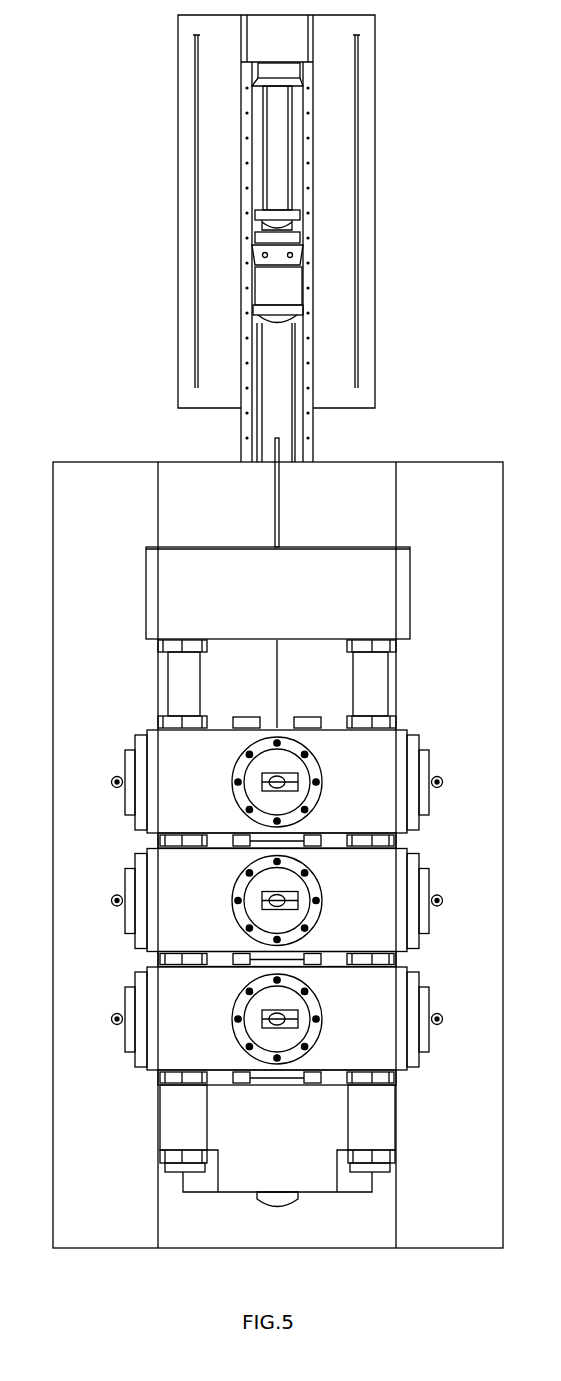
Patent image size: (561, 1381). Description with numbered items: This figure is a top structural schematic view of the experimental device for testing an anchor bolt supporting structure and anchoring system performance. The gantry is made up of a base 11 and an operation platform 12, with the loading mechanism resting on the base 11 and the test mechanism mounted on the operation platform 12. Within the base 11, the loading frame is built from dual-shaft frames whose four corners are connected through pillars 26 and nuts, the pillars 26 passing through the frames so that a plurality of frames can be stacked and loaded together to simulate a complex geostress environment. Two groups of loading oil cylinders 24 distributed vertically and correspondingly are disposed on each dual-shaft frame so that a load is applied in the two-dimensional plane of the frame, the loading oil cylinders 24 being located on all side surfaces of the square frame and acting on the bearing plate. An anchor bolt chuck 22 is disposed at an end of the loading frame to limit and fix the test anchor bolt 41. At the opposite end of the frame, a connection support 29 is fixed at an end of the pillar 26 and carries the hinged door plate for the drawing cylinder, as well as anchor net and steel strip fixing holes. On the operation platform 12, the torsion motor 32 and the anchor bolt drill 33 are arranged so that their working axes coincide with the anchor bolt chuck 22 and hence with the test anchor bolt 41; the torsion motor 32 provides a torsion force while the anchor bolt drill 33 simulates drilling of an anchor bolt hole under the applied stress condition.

The base 11 is at (62, 567).
The operation platform 12 is at (178, 185).
The anchor bolt chuck 22 is at (272, 1210).
The loading oil cylinder 24 is at (432, 772).
The pillar 26 is at (175, 683).
The connection support 29 is at (397, 568).
The torsion motor 32 is at (282, 290).
The anchor bolt drill 33 is at (282, 156).
The test anchor bolt 41 is at (280, 512).